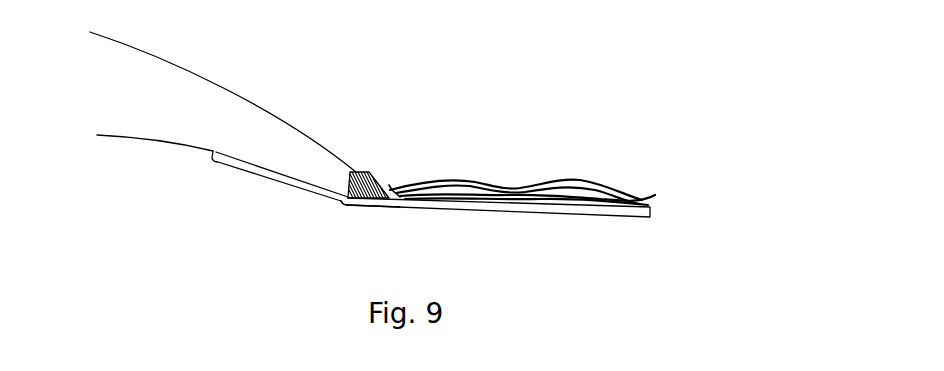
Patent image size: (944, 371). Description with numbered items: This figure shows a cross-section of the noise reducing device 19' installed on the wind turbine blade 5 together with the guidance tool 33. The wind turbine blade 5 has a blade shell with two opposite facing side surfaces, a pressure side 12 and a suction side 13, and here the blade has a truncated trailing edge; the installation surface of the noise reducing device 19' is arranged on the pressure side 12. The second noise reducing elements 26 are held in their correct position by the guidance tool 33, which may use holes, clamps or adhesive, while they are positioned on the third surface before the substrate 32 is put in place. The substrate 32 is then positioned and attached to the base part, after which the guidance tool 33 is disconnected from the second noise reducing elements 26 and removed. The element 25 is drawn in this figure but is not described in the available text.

The wind turbine blade 5 is at (75, 72).
The suction side 13 is at (195, 70).
The pressure side 12 is at (155, 140).
The noise reducing device 19' is at (340, 238).
The base plate 25 is at (627, 217).
The second noise reducing elements 26 is at (578, 164).
The substrate 32 is at (378, 167).
The guidance tool 33 is at (400, 178).